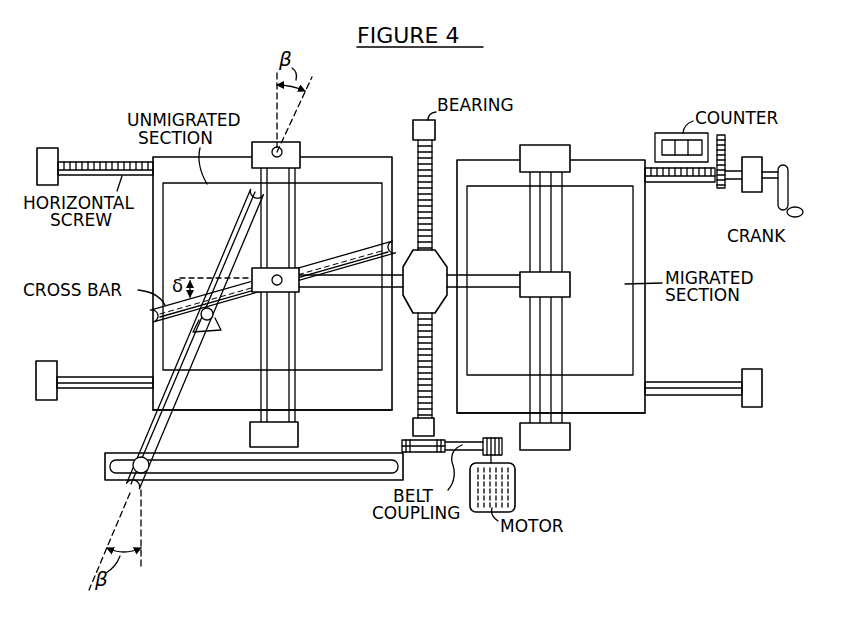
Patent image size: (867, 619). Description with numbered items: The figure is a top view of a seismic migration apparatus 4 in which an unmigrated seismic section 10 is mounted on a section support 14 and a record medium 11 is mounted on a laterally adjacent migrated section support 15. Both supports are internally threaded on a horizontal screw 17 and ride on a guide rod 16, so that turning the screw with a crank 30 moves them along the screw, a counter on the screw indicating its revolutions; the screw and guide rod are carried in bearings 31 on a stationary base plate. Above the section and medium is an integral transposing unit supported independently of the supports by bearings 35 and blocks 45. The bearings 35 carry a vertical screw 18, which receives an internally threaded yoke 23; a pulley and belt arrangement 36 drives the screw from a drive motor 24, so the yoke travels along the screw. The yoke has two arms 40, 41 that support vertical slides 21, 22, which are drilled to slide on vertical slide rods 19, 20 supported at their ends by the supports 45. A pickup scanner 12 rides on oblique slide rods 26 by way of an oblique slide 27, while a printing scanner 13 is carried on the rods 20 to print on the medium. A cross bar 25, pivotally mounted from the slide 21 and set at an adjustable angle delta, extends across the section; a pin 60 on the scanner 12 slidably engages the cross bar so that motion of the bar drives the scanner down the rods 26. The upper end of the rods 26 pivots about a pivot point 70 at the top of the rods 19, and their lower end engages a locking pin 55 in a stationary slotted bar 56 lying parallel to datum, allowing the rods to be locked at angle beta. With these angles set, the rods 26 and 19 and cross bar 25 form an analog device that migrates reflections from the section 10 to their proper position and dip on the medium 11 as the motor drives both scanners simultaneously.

The apparatus 4 is at (508, 144).
The unmigrated seismic section 10 is at (170, 243).
The record medium 11 is at (628, 238).
The pickup scanner 12 is at (198, 318).
The printing scanner 13 is at (568, 276).
The section support 14 is at (347, 409).
The migrated section support 15 is at (612, 406).
The guide rod 16 is at (115, 377).
The horizontal screw 17 is at (95, 166).
The vertical screw 18 is at (433, 152).
The vertical slide rods 19 is at (270, 234).
The vertical slide rods 20 is at (541, 233).
The vertical slide 21 is at (300, 291).
The vertical slide 22 is at (520, 288).
The yoke 23 is at (447, 275).
The drive motor 24 is at (515, 488).
The cross bar 25 is at (148, 316).
The oblique slide rods 26 is at (250, 227).
The oblique slide 27 is at (216, 322).
The crank 30 is at (781, 196).
The bearings 31 is at (50, 149).
The bearings 35 is at (413, 130).
The pulley and belt arrangement 36 is at (442, 452).
The yoke arm 40 is at (335, 288).
The yoke arm 41 is at (492, 286).
The supports 45 is at (300, 148).
The locking pin 55 is at (137, 458).
The slotted bar 56 is at (194, 480).
The pin 60 is at (214, 314).
The pivot point 70 is at (274, 151).